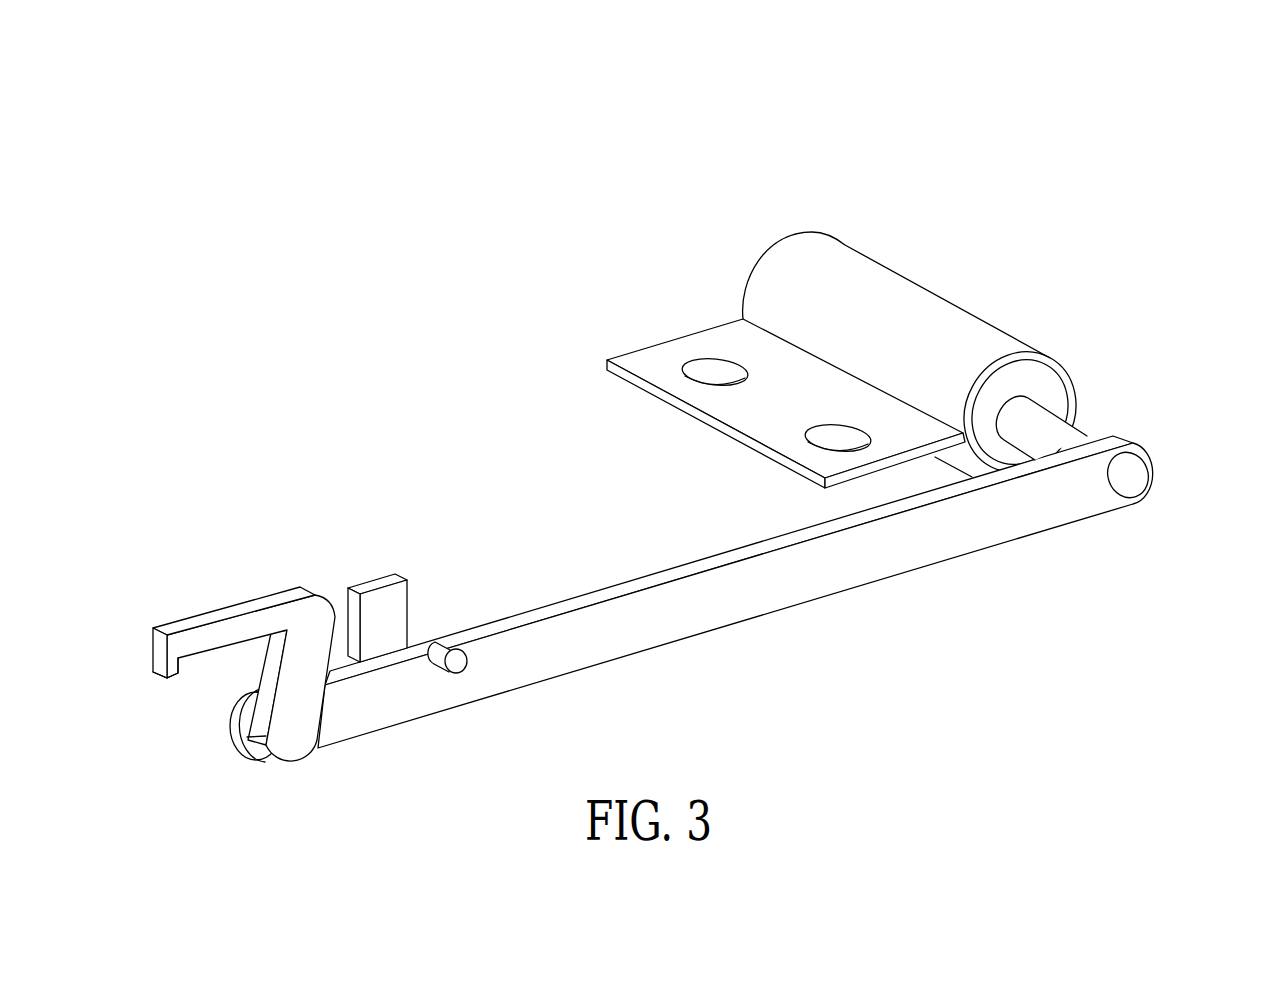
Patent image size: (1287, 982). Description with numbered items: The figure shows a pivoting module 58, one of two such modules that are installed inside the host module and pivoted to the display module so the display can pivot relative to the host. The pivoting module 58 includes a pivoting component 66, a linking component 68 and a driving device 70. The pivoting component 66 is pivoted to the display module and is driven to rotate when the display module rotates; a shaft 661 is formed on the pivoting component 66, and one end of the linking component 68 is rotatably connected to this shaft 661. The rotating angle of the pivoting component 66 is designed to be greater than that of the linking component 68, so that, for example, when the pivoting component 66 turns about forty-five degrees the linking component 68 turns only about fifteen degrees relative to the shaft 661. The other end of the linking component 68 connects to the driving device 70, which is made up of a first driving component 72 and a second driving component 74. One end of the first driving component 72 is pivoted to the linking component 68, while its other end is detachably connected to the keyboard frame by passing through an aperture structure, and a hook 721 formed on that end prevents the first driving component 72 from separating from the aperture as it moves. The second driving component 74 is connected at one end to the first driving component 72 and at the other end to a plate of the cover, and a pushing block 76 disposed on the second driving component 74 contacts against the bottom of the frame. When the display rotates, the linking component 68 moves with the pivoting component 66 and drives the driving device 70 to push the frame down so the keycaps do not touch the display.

The pivoting module 58 is at (1127, 132).
The pivoting component 66 is at (968, 342).
The shaft 661 is at (1048, 430).
The linking component 68 is at (912, 546).
The driving device 70 is at (535, 463).
The first driving component 72 is at (245, 632).
The hook 721 is at (172, 677).
The second driving component 74 is at (425, 655).
The pushing block 76 is at (380, 615).